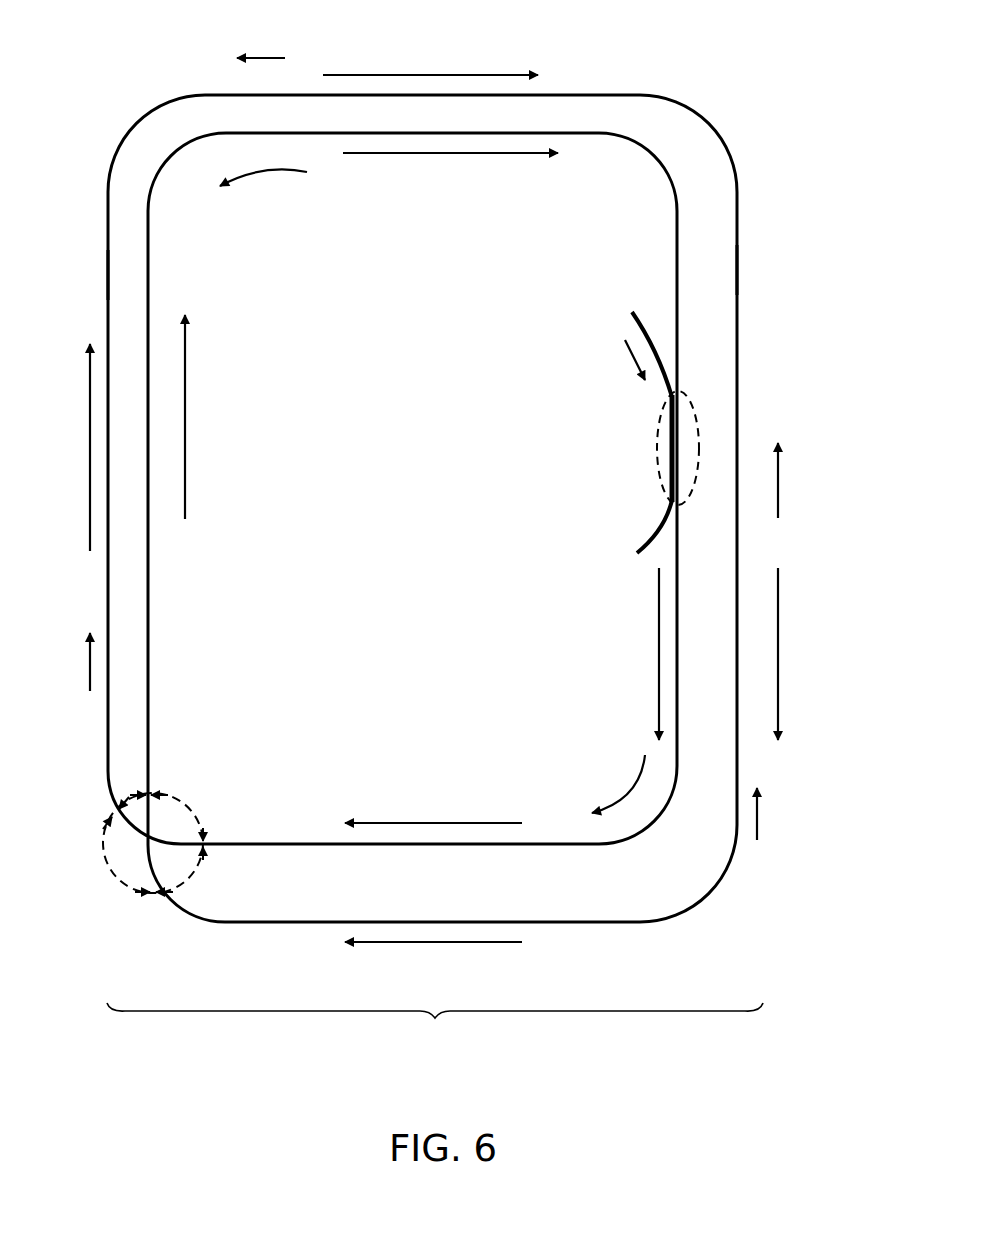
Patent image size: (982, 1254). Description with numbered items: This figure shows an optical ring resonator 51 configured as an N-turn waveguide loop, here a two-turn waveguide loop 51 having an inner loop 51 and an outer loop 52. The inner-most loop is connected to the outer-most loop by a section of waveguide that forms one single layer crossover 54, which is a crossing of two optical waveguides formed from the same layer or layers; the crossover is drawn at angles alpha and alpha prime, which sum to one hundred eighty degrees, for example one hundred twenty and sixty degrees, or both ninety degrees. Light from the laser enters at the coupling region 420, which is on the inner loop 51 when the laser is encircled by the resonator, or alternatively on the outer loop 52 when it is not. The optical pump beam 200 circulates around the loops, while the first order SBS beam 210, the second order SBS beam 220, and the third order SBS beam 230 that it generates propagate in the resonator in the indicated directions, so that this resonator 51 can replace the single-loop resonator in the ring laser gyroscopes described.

The optical ring resonator 51 is at (149, 588).
The outer loop 52 is at (108, 276).
The single layer crossover 54 is at (143, 848).
The optical pump beam 200 is at (422, 75).
The first order SBS beam 210 is at (275, 172).
The second order SBS beam 220 is at (90, 666).
The third order SBS beam 230 is at (265, 58).
The coupling region 420 is at (697, 422).